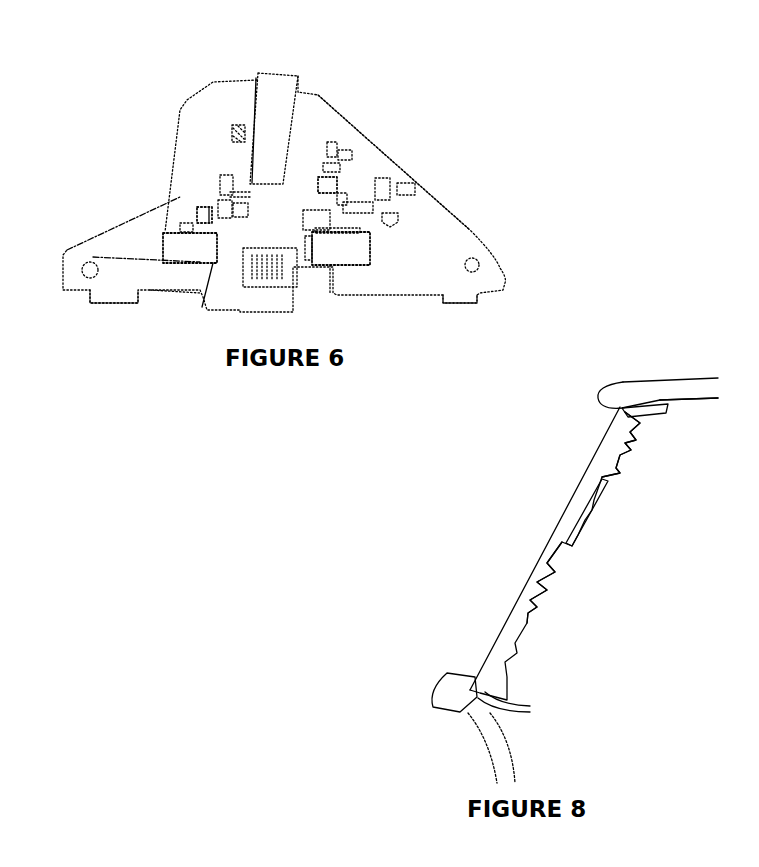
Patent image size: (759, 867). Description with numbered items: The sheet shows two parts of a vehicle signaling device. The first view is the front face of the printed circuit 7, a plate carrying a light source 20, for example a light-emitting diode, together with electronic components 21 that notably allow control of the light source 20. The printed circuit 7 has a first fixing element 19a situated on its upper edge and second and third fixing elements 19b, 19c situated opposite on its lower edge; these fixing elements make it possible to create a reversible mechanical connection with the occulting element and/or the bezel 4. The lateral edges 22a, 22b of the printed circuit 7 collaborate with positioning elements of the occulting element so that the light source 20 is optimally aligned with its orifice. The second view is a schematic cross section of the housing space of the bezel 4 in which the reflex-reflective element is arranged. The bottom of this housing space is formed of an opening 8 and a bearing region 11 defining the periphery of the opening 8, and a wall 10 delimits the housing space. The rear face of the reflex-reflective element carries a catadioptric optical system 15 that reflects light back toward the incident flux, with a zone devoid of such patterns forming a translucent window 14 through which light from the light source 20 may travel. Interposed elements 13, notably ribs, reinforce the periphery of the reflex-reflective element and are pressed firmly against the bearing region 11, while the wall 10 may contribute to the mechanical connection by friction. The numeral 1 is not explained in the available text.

In FIG. 6, the printed circuit 7 is at (483, 208).
In FIG. 6, the first fixing element 19a is at (280, 80).
In FIG. 6, the second fixing element 19b is at (107, 304).
In FIG. 6, the third fixing element 19c is at (455, 303).
In FIG. 6, the light source 20 is at (232, 130).
In FIG. 6, the electronic components 21 is at (175, 211).
In FIG. 6, the lateral edge 22a is at (127, 225).
In FIG. 6, the lateral edge 22b is at (425, 180).
In FIG. 8, the opening 8 is at (580, 432).
In FIG. 8, the bezel 4 is at (648, 385).
In FIG. 8, the wall 10 is at (660, 400).
In FIG. 8, the interposed elements 13 is at (627, 412).
In FIG. 8, the catadioptric optical system 15 is at (627, 445).
In FIG. 8, the translucent window 14 is at (596, 512).
In FIG. 8, the bearing region 11 is at (473, 707).
In FIG. 8, the trimmer 1 is at (752, 547).